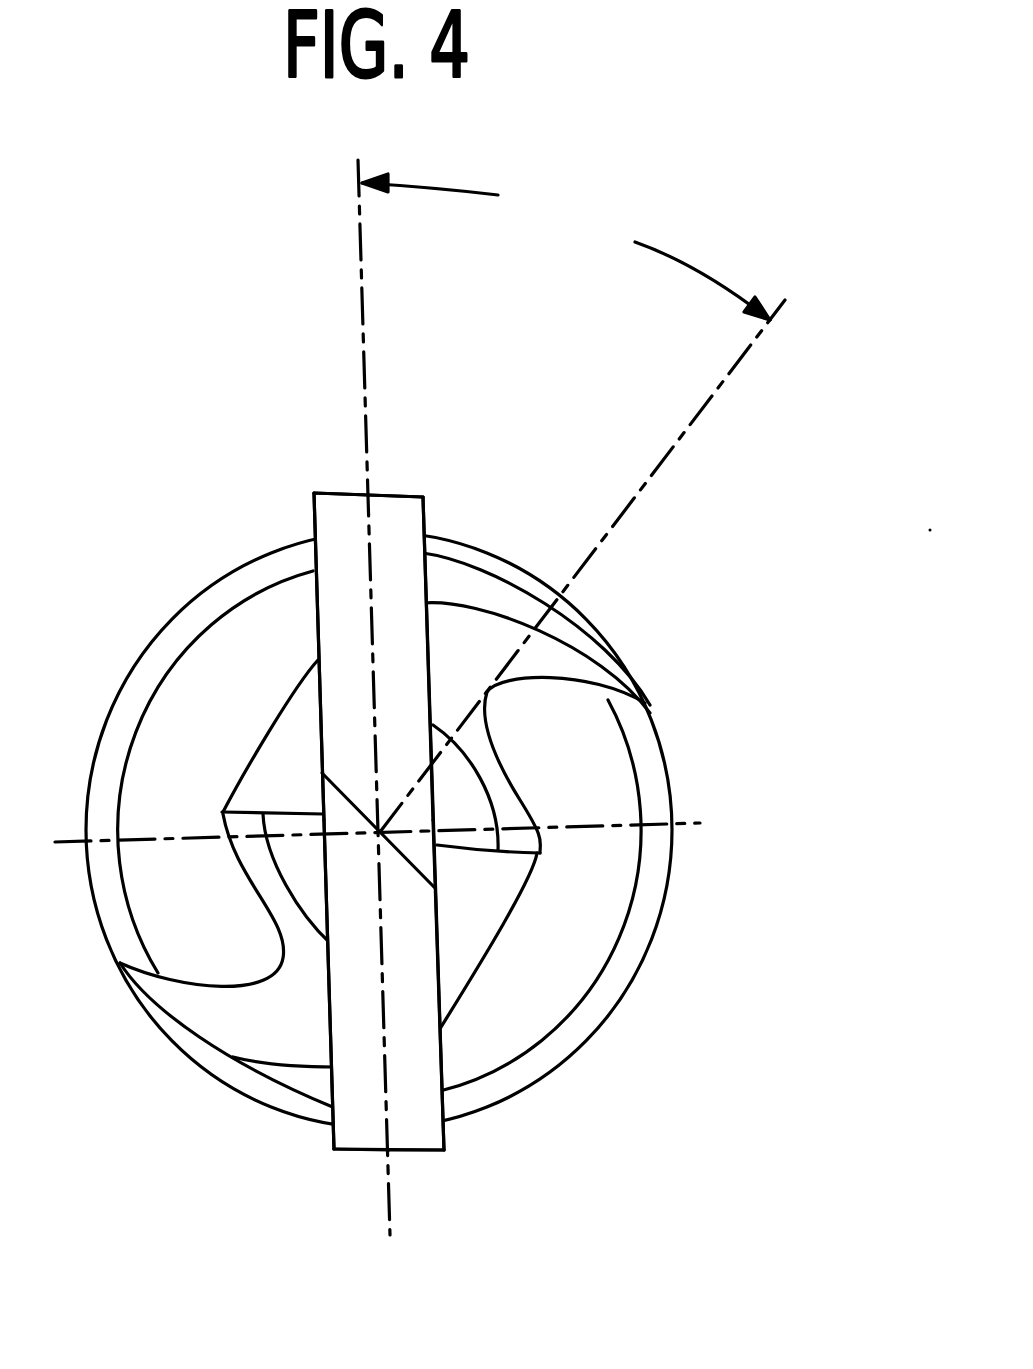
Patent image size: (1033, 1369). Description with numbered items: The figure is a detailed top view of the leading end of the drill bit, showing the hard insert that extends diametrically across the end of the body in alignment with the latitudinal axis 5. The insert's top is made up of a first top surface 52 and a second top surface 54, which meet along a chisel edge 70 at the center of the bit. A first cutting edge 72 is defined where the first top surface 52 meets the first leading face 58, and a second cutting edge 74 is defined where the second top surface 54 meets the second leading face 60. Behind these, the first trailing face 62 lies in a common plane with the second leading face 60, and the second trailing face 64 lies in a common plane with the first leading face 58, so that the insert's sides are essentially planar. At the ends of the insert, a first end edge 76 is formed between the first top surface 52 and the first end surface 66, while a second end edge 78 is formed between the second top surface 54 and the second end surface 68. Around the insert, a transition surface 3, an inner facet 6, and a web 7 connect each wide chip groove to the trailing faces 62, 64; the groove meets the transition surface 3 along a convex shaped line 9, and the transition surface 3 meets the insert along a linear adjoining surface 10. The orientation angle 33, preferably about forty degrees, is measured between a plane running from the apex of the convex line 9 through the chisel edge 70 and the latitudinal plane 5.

The transition surface 3 is at (587, 662).
The latitudinal axis 5 is at (393, 1205).
The inner facet 6 is at (460, 806).
The web 7 is at (468, 877).
The convex shaped line 9 is at (548, 683).
The linear adjoining surface 10 is at (428, 662).
The orientation angle 33 is at (572, 178).
The first top surface 52 is at (342, 684).
The second top surface 54 is at (432, 1057).
The first leading face 58 is at (317, 621).
The second leading face 60 is at (437, 938).
The first trailing face 62 is at (424, 515).
The second trailing face 64 is at (334, 1137).
The first end surface 66 is at (398, 493).
The second end surface 68 is at (347, 1150).
The chisel edge 70 is at (397, 860).
The first cutting edge 72 is at (315, 526).
The second cutting edge 74 is at (447, 1143).
The first end edge 76 is at (338, 493).
The second end edge 78 is at (368, 1150).